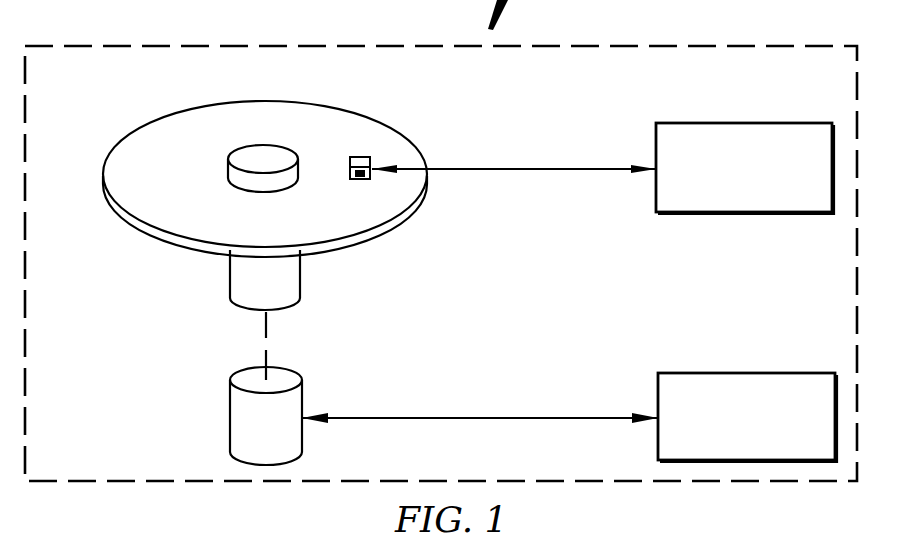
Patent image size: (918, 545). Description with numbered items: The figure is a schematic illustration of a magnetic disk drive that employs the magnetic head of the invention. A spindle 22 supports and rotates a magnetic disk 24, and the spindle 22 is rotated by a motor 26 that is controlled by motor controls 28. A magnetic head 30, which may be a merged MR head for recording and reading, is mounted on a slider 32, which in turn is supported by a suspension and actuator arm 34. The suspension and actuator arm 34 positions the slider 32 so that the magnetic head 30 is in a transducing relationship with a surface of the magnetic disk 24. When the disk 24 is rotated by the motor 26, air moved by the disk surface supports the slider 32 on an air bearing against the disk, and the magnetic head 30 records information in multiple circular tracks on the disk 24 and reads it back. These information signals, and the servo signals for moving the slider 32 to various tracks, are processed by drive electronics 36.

The spindle 22 is at (229, 280).
The magnetic disk 24 is at (142, 141).
The motor 26 is at (230, 419).
The motor controls 28 is at (744, 373).
The magnetic head 30 is at (363, 180).
The slider 32 is at (360, 157).
The suspension and actuator arm 34 is at (508, 170).
The drive electronics 36 is at (743, 123).